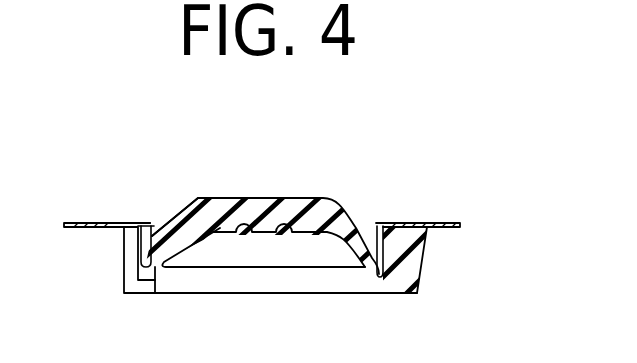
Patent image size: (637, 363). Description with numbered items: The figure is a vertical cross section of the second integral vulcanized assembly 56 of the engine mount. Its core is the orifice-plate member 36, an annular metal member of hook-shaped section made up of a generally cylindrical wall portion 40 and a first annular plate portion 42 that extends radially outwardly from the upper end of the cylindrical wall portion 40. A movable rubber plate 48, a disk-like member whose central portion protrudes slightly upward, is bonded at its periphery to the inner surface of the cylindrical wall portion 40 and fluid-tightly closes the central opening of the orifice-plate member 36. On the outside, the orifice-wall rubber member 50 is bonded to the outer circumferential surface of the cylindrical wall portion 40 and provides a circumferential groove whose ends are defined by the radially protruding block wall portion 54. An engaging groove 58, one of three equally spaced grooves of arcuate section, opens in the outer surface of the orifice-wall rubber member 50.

The orifice-plate member 36 is at (404, 214).
The cylindrical wall portion 40 is at (127, 233).
The first annular plate portion 42 is at (95, 222).
The movable rubber plate 48 is at (290, 208).
The orifice-wall rubber member 50 is at (143, 292).
The block wall portion 54 is at (418, 250).
The second integral vulcanized assembly 56 is at (245, 188).
The engaging groove 58 is at (133, 274).